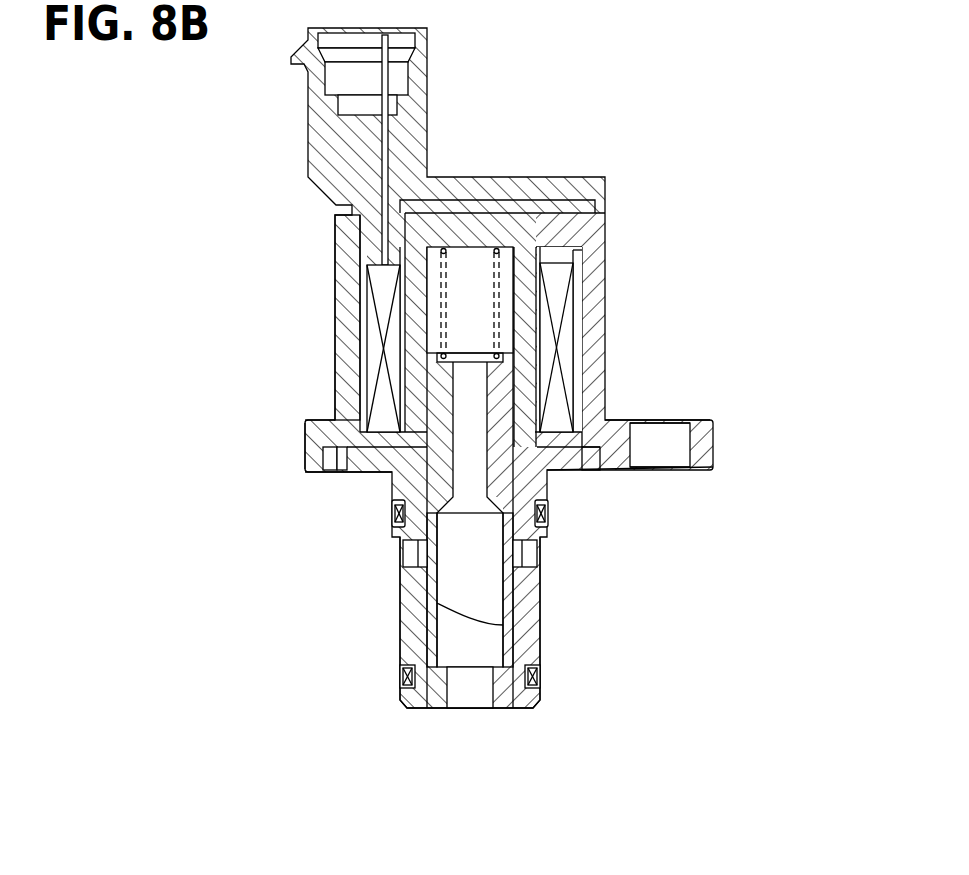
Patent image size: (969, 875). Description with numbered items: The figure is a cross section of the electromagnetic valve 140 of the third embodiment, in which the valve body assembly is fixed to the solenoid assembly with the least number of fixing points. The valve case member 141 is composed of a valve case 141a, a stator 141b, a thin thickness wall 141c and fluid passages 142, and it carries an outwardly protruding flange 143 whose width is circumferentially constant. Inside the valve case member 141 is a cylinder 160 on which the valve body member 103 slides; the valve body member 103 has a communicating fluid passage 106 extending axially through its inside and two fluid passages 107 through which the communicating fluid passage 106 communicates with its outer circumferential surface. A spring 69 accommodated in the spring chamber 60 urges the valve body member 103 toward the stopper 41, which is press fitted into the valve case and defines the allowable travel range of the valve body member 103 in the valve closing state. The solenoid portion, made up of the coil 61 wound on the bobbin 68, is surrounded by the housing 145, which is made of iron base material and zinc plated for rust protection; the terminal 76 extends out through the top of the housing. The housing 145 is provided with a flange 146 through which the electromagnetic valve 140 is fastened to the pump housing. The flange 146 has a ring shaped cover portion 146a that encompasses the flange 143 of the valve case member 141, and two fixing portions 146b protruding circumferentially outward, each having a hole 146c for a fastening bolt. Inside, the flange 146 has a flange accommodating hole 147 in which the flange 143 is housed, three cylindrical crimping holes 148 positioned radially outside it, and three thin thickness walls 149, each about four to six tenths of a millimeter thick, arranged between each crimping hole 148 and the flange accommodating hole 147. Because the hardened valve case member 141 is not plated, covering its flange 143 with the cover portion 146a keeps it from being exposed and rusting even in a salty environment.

The electromagnetic valve 140 is at (557, 116).
The connector terminal 76 is at (427, 95).
The valve case member 141 is at (545, 522).
The valve case 141a is at (538, 648).
The stator 141b is at (560, 230).
The thin thickness wall 141c is at (585, 363).
The bobbin 68 is at (575, 255).
The coil 61 is at (560, 288).
The spring 69 is at (435, 280).
The spring chamber 60 is at (462, 308).
The valve body member 103 is at (512, 476).
The communicating fluid passage 106 is at (493, 587).
The fluid passages 107 is at (503, 622).
The cylinder 160 is at (428, 643).
The stopper 41 is at (503, 708).
The flange 143 is at (370, 473).
The fluid passages 142 is at (418, 553).
The housing 145 is at (340, 362).
The flange 146 is at (322, 421).
The ring shaped cover portion 146a is at (305, 441).
The fixing portions 146b is at (713, 432).
The hole 146c is at (685, 466).
The flange accommodating hole 147 is at (594, 471).
The cylindrical crimping holes 148 is at (330, 470).
The thin thickness walls 149 is at (340, 473).